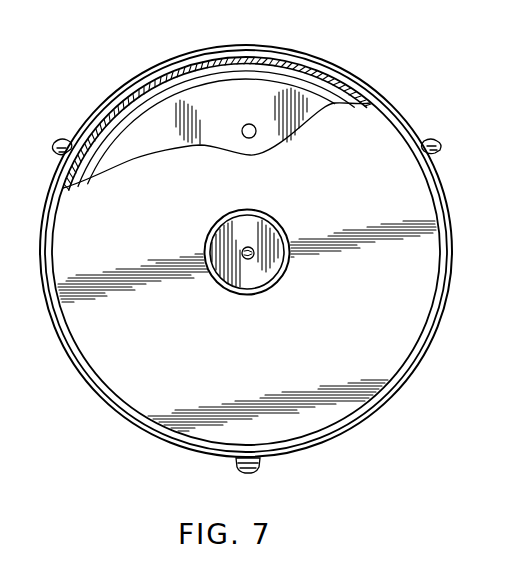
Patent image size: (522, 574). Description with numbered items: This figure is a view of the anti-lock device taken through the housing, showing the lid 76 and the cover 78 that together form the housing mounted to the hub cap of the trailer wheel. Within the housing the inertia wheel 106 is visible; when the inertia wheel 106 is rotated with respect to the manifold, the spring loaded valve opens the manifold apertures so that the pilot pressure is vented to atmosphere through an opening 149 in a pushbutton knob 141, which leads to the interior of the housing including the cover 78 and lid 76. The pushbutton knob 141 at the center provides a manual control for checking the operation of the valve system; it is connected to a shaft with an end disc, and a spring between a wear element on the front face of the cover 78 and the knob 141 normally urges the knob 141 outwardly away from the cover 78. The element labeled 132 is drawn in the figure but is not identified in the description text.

The lid 76 is at (320, 58).
The cover 78 is at (400, 316).
The inertia wheel 106 is at (200, 108).
The hole 132 is at (253, 124).
The pushbutton knob 141 is at (267, 214).
The opening 149 is at (252, 256).